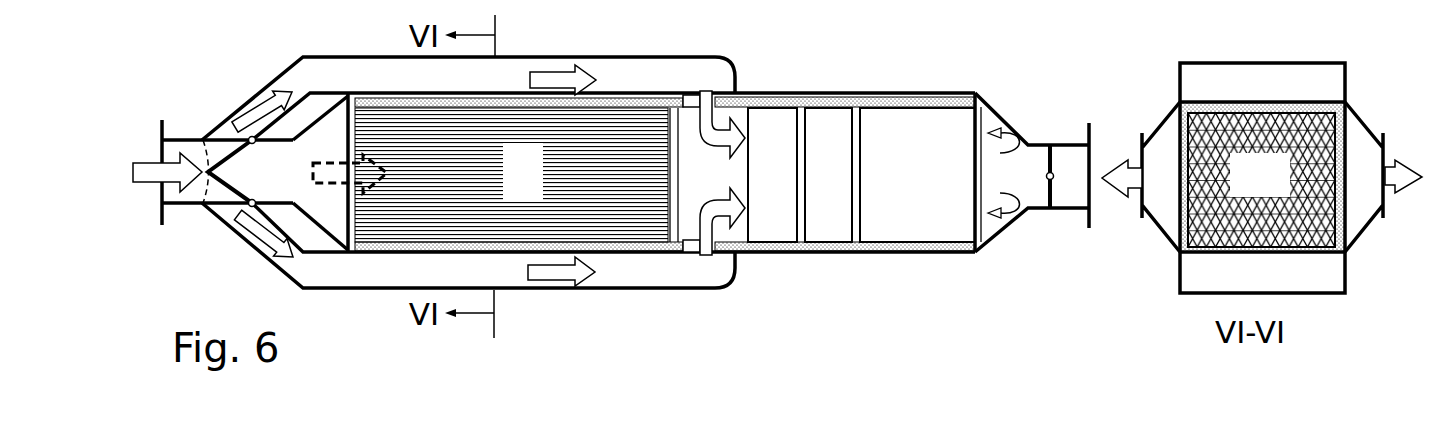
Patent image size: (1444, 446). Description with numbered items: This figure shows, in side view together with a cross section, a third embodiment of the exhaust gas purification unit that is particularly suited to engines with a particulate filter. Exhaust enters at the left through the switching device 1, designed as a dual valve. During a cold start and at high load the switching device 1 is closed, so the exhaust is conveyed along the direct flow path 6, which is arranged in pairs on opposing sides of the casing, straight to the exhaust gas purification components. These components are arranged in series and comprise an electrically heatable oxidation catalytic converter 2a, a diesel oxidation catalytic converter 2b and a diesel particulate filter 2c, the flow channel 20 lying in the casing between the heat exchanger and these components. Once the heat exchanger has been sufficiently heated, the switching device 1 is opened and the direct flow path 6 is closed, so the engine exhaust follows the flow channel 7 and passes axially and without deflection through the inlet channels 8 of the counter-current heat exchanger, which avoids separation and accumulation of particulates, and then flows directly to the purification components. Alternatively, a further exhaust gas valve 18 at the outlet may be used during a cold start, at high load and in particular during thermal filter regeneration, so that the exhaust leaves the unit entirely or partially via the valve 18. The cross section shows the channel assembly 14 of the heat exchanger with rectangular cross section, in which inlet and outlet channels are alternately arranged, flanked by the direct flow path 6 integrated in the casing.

The switching device 1 is at (229, 172).
The flow channel 7 is at (330, 174).
The direct flow path 6 is at (773, 175).
The inlet channels 8 is at (515, 172).
The flow channel 20 is at (714, 173).
The electrically heatable oxidation catalytic converter 2a is at (772, 175).
The diesel oxidation catalytic converter 2b is at (828, 175).
The diesel particulate filter 2c is at (940, 175).
The exhaust gas valve 18 is at (1054, 197).
The channel assembly 14 is at (1262, 177).